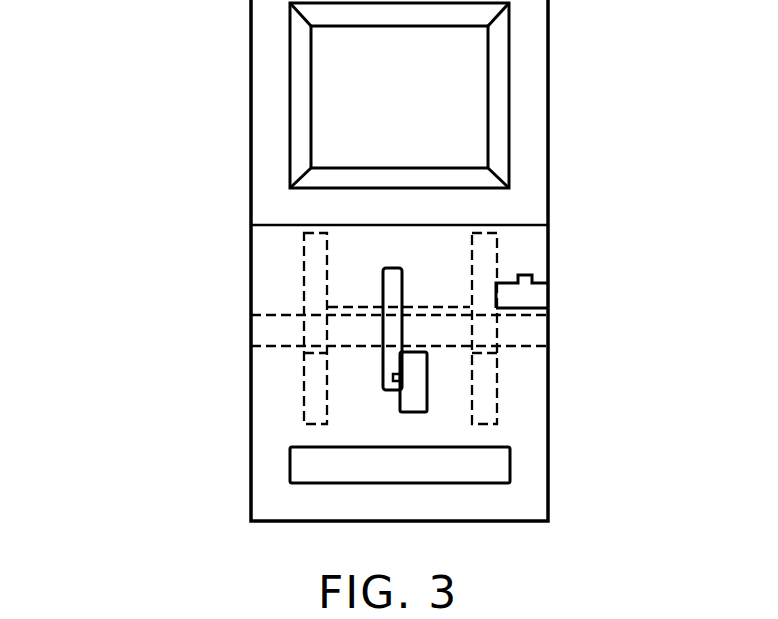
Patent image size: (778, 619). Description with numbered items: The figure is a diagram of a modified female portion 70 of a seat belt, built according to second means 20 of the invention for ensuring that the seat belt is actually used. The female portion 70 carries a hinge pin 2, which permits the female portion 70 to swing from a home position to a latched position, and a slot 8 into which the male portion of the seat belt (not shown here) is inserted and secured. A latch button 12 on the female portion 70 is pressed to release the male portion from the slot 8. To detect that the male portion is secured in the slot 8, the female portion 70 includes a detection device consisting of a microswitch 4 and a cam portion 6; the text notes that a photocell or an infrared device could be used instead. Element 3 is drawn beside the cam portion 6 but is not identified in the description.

The second means 20 is at (203, 123).
The latch button 12 is at (499, 75).
The female portion 70 is at (213, 328).
The hinge pin 2 is at (534, 334).
The cam portion 6 is at (548, 251).
The connector element 3 is at (532, 293).
The microswitch 4 is at (415, 388).
The slot 8 is at (497, 460).